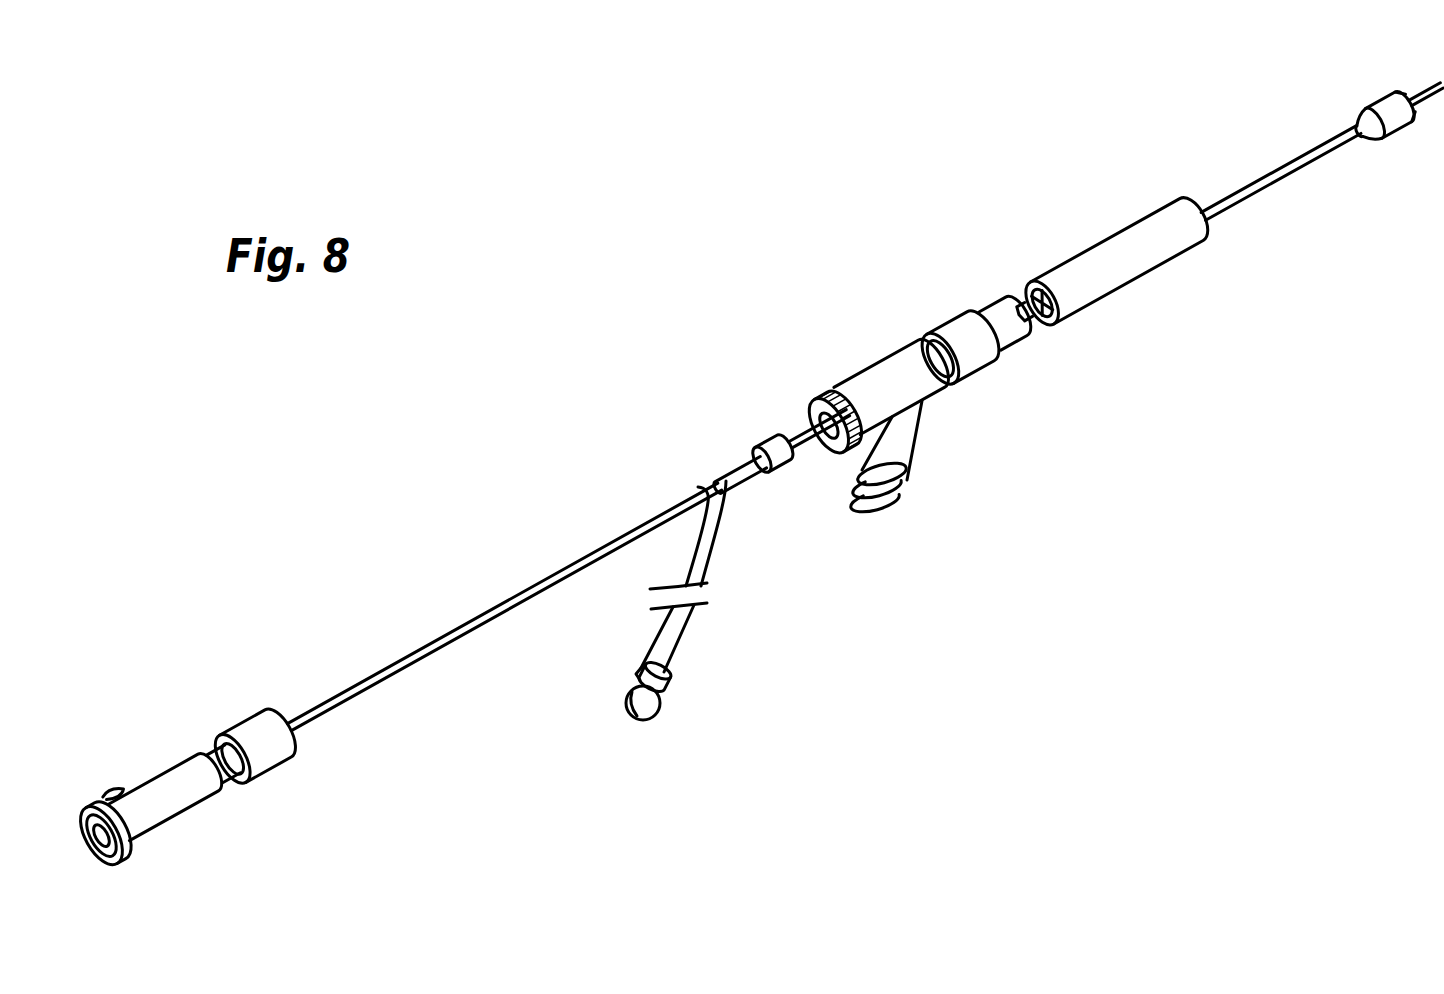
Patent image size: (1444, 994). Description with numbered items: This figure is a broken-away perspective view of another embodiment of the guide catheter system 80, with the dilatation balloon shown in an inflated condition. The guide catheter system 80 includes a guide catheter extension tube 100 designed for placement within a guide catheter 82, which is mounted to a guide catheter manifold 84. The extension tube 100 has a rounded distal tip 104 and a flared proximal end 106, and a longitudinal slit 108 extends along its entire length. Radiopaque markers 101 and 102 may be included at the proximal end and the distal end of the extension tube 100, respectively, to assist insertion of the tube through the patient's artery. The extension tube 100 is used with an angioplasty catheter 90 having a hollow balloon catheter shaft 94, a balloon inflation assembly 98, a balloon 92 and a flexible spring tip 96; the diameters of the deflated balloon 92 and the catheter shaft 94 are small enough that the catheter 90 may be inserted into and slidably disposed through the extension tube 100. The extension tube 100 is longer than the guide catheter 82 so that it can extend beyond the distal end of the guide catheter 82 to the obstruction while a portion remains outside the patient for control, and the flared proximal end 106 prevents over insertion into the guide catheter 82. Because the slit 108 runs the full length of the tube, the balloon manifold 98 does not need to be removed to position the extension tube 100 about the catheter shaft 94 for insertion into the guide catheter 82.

The guide catheter system 80 is at (985, 410).
The guide catheter 82 is at (998, 304).
The guide catheter manifold 84 is at (885, 365).
The angioplasty catheter 90 is at (1404, 134).
The balloon 92 is at (1380, 106).
The balloon catheter shaft 94 is at (422, 646).
The flexible spring tip 96 is at (1427, 88).
The balloon inflation assembly 98 is at (152, 790).
The guide catheter extension tube 100 is at (746, 472).
The radiopaque marker 101 is at (672, 684).
The radiopaque marker 102 is at (774, 485).
The rounded distal tip 104 is at (792, 426).
The flared proximal end 106 is at (653, 717).
The longitudinal slit 108 is at (698, 539).